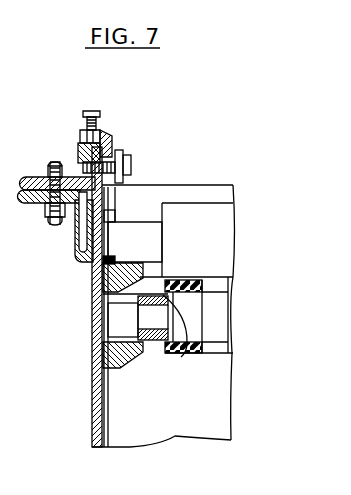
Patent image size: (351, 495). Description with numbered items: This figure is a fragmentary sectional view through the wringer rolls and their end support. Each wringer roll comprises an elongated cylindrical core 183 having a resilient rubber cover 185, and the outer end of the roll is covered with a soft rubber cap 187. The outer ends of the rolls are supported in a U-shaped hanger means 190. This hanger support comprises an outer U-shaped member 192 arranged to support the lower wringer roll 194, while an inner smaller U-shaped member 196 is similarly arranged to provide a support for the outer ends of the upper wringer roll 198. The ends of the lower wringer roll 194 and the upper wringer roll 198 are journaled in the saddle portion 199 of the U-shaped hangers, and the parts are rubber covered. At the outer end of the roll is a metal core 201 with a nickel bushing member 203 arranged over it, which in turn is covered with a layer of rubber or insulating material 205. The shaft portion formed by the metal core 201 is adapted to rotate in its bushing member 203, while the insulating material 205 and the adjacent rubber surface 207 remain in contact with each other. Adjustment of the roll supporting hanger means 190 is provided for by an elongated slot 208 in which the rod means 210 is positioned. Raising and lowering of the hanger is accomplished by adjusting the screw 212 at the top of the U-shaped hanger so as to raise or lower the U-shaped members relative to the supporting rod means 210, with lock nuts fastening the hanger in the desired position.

The elongated cylindrical core 183 is at (214, 312).
The resilient rubber cover 185 is at (232, 356).
The soft rubber cap 187 is at (159, 357).
The U-shaped hanger means 190 is at (122, 384).
The outer U-shaped member 192 is at (95, 373).
The lower wringer roll 194 is at (233, 294).
The inner smaller U-shaped member 196 is at (92, 270).
The upper wringer roll 198 is at (232, 226).
The saddle portion 199 is at (97, 282).
The metal core 201 is at (162, 325).
The nickel bushing member 203 is at (162, 220).
The layer of rubber or insulating material 205 is at (157, 283).
The rubber surface 207 is at (136, 261).
The elongated slot 208 is at (110, 156).
The rod means 210 is at (82, 164).
The adjusting screw 212 is at (97, 113).